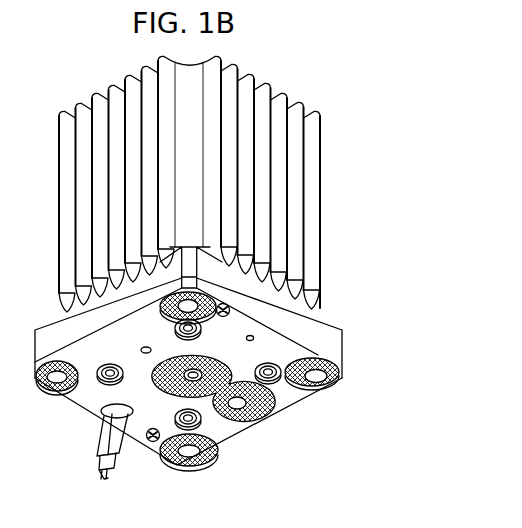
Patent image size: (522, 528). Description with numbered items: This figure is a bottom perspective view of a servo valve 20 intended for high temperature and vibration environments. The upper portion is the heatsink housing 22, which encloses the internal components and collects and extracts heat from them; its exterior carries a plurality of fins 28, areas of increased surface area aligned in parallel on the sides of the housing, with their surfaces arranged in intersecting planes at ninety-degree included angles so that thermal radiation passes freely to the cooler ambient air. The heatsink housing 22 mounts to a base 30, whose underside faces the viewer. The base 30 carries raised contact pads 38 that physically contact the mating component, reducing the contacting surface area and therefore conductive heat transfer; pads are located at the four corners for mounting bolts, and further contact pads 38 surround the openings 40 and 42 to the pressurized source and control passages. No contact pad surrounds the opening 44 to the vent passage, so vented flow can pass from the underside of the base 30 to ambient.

The servo valve 20 is at (277, 75).
The heatsink housing 22 is at (316, 319).
The fins 28 is at (297, 200).
The base 30 is at (289, 401).
The contact pads 38 is at (342, 374).
The opening 40 is at (262, 421).
The opening 42 is at (197, 381).
The opening 44 is at (141, 349).